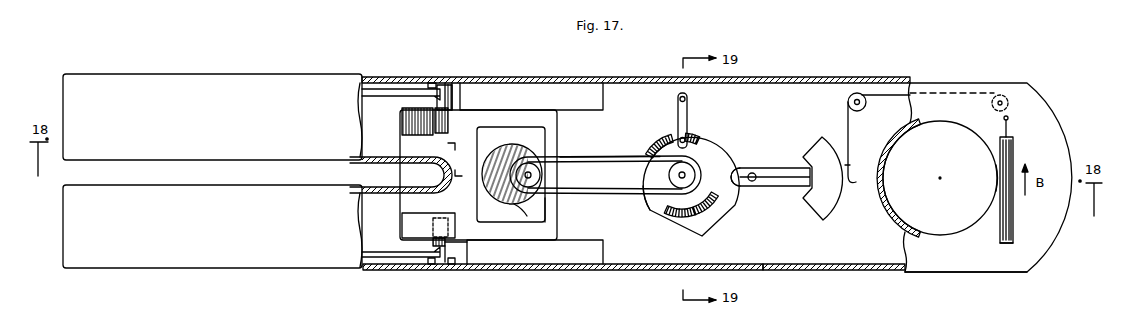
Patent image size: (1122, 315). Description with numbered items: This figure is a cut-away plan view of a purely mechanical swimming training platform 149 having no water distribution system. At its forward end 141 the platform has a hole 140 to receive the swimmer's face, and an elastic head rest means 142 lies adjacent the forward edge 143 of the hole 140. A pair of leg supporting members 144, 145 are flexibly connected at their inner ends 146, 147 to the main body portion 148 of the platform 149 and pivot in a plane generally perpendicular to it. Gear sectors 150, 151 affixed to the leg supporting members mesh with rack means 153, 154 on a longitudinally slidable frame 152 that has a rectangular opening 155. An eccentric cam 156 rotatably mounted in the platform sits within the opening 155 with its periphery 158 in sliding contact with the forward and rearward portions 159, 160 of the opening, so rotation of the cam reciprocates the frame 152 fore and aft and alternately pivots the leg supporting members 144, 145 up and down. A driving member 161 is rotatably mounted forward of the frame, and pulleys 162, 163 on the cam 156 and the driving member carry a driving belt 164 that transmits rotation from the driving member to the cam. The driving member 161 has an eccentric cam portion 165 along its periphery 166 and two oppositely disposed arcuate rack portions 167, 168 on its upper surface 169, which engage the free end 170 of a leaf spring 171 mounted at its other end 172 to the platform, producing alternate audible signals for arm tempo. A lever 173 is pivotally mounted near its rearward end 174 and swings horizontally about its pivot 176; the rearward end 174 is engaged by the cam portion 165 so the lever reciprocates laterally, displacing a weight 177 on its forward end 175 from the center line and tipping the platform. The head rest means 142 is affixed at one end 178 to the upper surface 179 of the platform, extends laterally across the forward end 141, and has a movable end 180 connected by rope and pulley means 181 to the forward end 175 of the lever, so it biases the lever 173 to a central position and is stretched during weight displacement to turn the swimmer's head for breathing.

The hole 140 is at (941, 128).
The forward end 141 is at (1053, 154).
The elastic head rest means 142 is at (1009, 210).
The forward edge 143 is at (997, 186).
The leg supporting member 144 is at (188, 87).
The leg supporting member 145 is at (208, 258).
The inner end 146 is at (449, 82).
The inner end 147 is at (439, 262).
The main body portion 148 is at (614, 266).
The platform 149 is at (862, 266).
The gear sector 150 is at (464, 106).
The gear sector 151 is at (432, 244).
The longitudinally slidable frame 152 is at (530, 232).
The rack means 153 is at (402, 124).
The rack means 154 is at (410, 223).
The rectangular opening 155 is at (545, 134).
The eccentric cam 156 is at (510, 147).
The periphery 158 is at (520, 219).
The forward portion 159 is at (545, 208).
The rearward portion 160 is at (477, 206).
The driving member 161 is at (658, 177).
The pulley 162 is at (541, 174).
The pulley 163 is at (697, 170).
The driving belt 164 is at (633, 156).
The eccentric cam portion 165 is at (705, 234).
The periphery 166 is at (679, 222).
The arcuate rack portion 167 is at (712, 207).
The arcuate rack portion 168 is at (691, 145).
The upper surface 169 is at (658, 201).
The free end 170 is at (680, 139).
The leaf spring 171 is at (688, 116).
The other end 172 is at (687, 99).
The lever 173 is at (777, 167).
The rearward end 174 is at (743, 168).
The forward end 175 is at (848, 191).
The pivot 176 is at (752, 182).
The weight 177 is at (812, 203).
The one end 178 is at (1012, 234).
The upper surface 179 is at (958, 262).
The movable end 180 is at (1010, 144).
The rope and pulley means 181 is at (1010, 100).